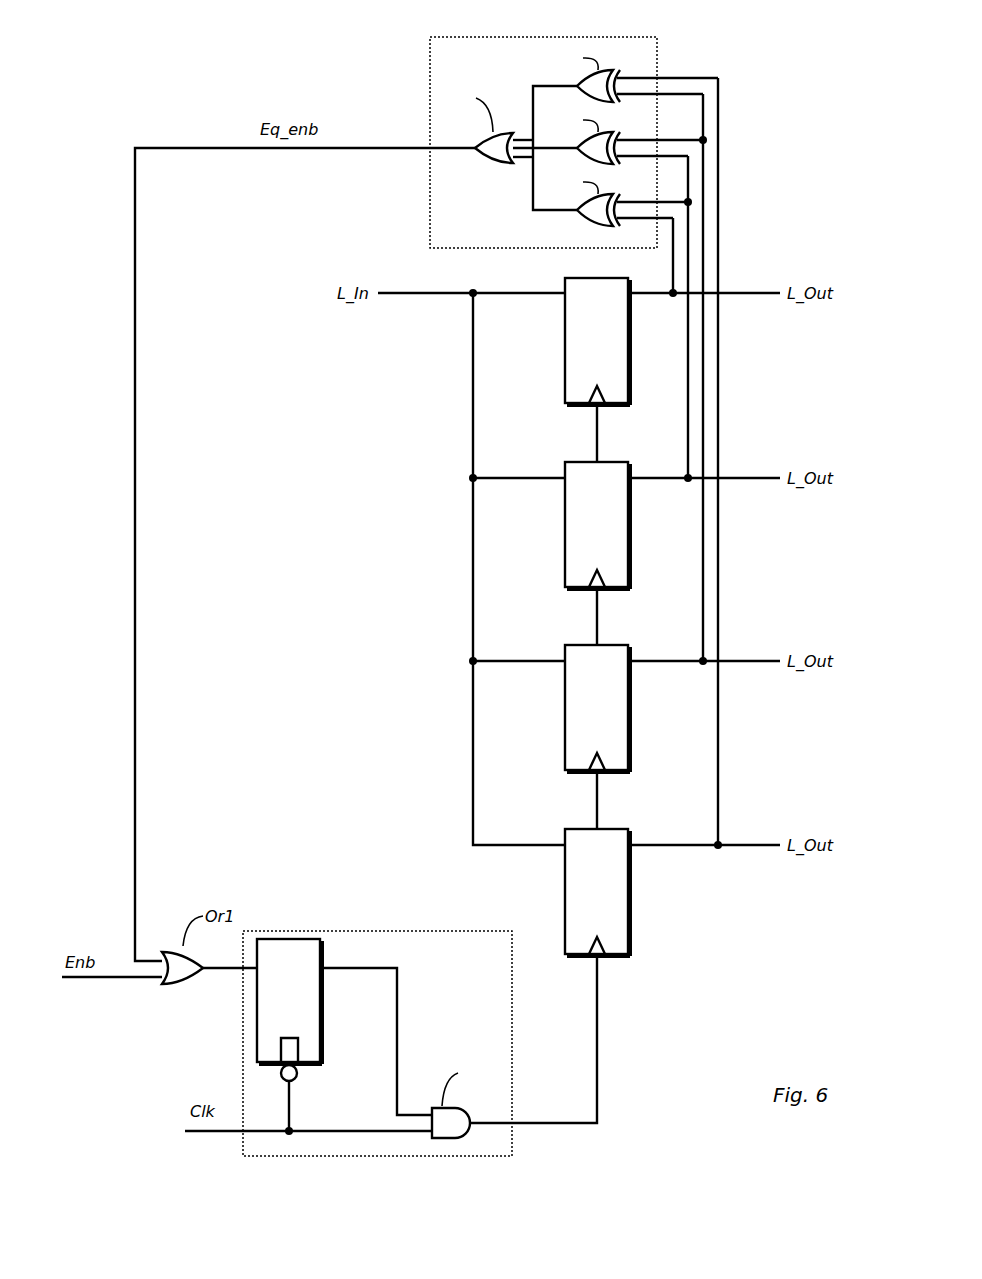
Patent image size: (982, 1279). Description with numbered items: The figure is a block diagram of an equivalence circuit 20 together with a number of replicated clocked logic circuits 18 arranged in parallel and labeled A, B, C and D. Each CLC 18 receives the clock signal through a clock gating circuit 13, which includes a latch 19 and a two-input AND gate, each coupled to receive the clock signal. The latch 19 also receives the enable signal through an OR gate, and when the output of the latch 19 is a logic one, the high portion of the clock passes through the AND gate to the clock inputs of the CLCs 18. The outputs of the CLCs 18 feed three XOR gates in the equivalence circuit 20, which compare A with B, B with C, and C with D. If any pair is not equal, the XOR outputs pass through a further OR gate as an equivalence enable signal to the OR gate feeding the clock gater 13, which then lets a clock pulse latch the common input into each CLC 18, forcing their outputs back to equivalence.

The equivalence circuit 20 is at (620, 36).
The clocked logic circuit 18 is at (588, 366).
The latch 19 is at (280, 1026).
The clock gating circuit 13 is at (377, 1028).